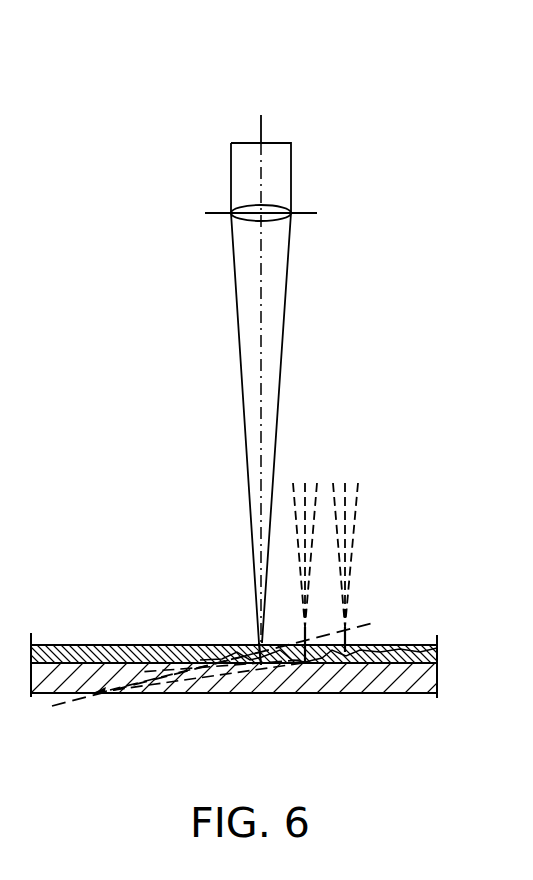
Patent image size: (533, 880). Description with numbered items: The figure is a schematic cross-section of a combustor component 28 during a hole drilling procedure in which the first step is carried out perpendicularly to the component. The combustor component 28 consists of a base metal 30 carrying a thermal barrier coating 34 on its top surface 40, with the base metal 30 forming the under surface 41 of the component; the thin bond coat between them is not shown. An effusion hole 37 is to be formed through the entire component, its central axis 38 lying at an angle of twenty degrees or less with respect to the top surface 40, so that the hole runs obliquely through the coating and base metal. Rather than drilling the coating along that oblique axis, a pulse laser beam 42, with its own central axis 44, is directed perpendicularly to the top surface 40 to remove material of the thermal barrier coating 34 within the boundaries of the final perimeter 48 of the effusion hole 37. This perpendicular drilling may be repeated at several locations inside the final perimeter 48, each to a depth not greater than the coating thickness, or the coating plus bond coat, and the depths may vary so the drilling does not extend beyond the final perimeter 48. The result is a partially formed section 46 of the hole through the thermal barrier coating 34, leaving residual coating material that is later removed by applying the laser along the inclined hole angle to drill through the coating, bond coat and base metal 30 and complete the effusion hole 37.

The combustor component 28 is at (415, 737).
The base metal 30 is at (430, 684).
The thermal barrier coating 34 is at (430, 652).
The effusion hole 37 is at (178, 695).
The central axis 38 is at (73, 700).
The top surface 40 is at (83, 645).
The under surface 41 is at (350, 694).
The pulse laser beam 42 is at (290, 263).
The central axis of the pulse laser beam 44 is at (261, 127).
The section of the hole 46 is at (303, 663).
The final perimeter 48 is at (140, 645).